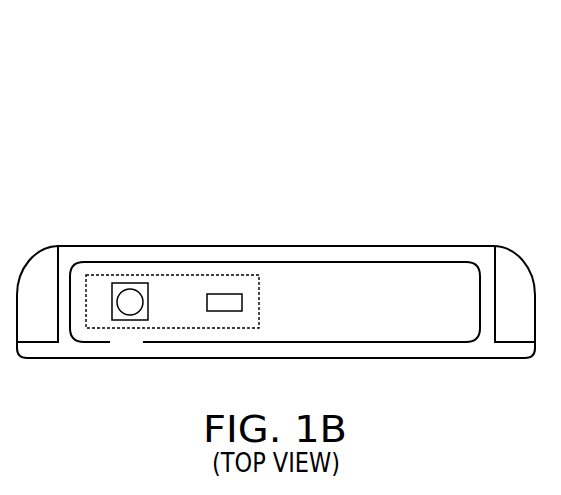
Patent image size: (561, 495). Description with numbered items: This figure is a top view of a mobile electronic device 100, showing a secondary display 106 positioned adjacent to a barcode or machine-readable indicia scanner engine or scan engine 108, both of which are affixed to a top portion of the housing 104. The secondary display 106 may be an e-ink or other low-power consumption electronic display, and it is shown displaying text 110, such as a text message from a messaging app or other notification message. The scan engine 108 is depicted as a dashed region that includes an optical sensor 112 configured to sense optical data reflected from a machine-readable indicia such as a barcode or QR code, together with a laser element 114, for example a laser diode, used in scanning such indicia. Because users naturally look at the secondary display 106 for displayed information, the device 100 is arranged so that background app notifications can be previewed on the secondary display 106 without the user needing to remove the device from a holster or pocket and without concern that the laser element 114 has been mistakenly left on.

The mobile electronic device 100 is at (170, 78).
The housing 104 is at (428, 358).
The secondary display 106 is at (308, 250).
The scan engine 108 is at (128, 342).
The text 110 is at (427, 268).
The optical sensor 112 is at (130, 283).
The laser element 114 is at (225, 294).